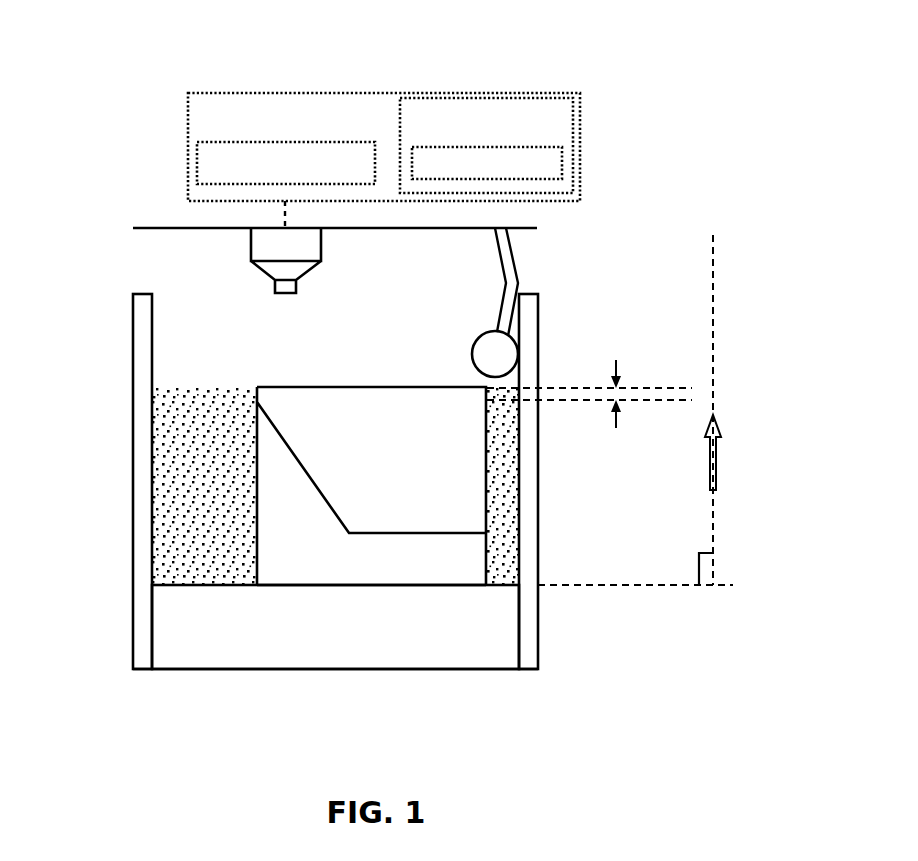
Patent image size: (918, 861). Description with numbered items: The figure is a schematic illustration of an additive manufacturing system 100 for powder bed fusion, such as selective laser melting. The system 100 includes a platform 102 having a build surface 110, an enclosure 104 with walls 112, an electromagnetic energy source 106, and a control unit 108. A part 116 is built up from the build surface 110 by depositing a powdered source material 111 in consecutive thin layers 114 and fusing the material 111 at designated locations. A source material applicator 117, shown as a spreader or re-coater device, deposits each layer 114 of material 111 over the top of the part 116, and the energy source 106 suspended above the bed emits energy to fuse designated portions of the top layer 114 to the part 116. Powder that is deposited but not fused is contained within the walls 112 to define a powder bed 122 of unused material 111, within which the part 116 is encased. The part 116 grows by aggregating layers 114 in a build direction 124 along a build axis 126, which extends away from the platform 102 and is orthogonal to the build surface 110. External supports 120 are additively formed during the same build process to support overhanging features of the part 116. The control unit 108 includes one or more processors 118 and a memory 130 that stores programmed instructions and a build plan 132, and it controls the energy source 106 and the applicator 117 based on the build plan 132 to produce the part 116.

The additive manufacturing system 100 is at (110, 153).
The platform 102 is at (173, 658).
The enclosure 104 is at (330, 458).
The electromagnetic energy source 106 is at (308, 242).
The control unit 108 is at (373, 92).
The build surface 110 is at (182, 585).
The material 111 is at (183, 403).
The walls 112 is at (138, 333).
The layer 114 is at (616, 365).
The part 116 is at (458, 453).
The source material applicator 117 is at (517, 293).
The processor 118 is at (197, 165).
The external supports 120 is at (470, 558).
The powder bed 122 is at (183, 505).
The build direction 124 is at (718, 462).
The build axis 126 is at (713, 365).
The memory 130 is at (573, 115).
The build plan 132 is at (562, 162).